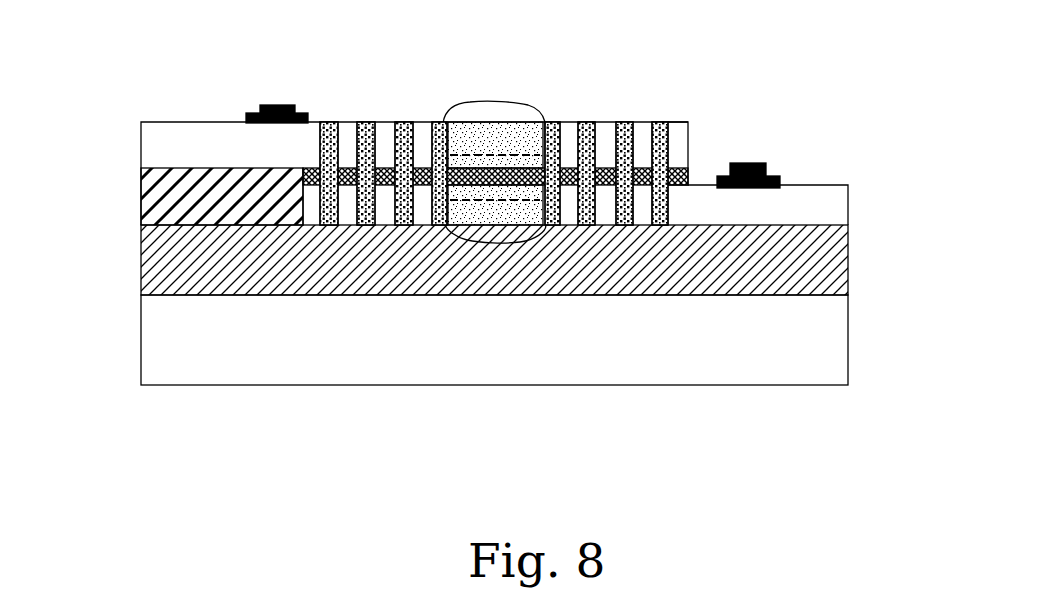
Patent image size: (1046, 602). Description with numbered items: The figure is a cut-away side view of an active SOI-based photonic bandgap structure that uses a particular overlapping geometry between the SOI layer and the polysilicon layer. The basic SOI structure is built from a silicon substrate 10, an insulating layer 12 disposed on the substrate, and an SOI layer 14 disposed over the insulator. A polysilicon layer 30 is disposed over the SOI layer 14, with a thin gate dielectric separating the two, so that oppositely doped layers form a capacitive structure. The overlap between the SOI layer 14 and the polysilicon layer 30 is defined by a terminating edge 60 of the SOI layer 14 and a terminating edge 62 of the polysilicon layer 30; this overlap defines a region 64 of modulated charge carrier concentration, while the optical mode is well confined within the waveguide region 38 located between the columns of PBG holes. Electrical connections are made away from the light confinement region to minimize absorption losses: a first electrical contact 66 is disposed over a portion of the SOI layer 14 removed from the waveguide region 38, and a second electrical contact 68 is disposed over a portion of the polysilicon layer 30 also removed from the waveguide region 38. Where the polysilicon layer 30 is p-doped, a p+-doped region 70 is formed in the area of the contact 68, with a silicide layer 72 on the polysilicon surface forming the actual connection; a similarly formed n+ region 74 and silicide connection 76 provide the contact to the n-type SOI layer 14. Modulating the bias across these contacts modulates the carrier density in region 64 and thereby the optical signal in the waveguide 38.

The silicon substrate 10 is at (830, 340).
The insulating layer 12 is at (822, 265).
The SOI layer 14 is at (828, 207).
The polysilicon layer 30 is at (162, 142).
The waveguide region 38 is at (522, 138).
The terminating edge of SOI layer 60 is at (300, 218).
The terminating edge of polysilicon layer 62 is at (690, 152).
The region of modulated charge carrier concentration 64 is at (502, 167).
The first electrical contact 66 is at (762, 147).
The second electrical contact 68 is at (277, 105).
The p+-doped region 70 is at (268, 150).
The silicide layer 72 is at (308, 120).
The n+ region 74 is at (780, 200).
The silicide connection 76 is at (775, 175).